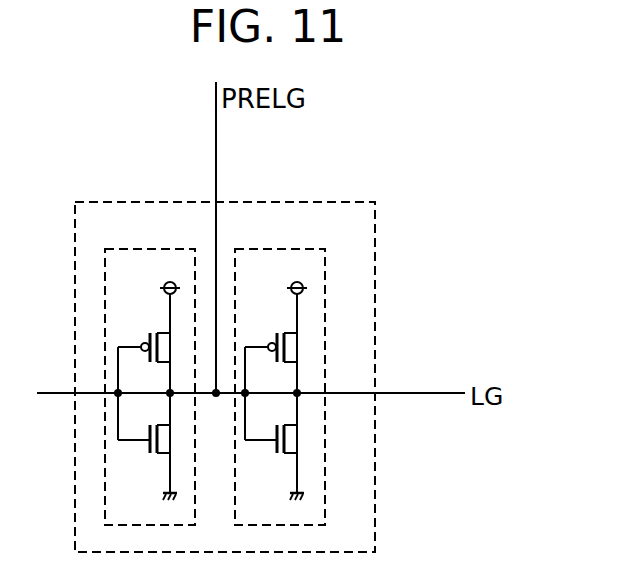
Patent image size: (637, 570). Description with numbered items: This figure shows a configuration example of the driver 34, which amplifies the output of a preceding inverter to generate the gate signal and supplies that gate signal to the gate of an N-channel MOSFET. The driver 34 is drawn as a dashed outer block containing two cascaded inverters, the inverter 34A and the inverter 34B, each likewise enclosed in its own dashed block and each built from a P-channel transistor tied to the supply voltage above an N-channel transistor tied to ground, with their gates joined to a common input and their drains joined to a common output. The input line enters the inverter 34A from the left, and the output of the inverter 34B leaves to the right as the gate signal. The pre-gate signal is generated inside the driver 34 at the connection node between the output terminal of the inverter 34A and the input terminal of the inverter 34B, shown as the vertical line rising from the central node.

The driver 34 is at (346, 201).
The inverter 34A is at (146, 247).
The inverter 34B is at (281, 247).